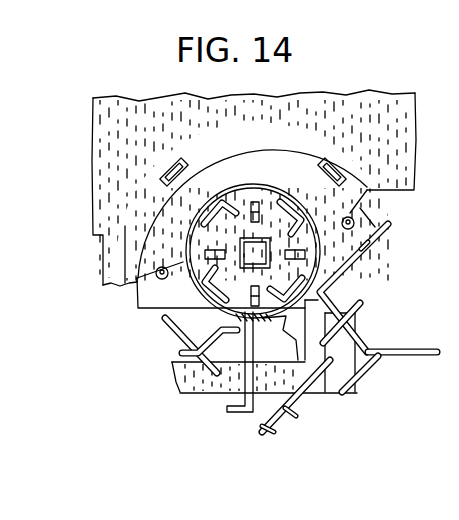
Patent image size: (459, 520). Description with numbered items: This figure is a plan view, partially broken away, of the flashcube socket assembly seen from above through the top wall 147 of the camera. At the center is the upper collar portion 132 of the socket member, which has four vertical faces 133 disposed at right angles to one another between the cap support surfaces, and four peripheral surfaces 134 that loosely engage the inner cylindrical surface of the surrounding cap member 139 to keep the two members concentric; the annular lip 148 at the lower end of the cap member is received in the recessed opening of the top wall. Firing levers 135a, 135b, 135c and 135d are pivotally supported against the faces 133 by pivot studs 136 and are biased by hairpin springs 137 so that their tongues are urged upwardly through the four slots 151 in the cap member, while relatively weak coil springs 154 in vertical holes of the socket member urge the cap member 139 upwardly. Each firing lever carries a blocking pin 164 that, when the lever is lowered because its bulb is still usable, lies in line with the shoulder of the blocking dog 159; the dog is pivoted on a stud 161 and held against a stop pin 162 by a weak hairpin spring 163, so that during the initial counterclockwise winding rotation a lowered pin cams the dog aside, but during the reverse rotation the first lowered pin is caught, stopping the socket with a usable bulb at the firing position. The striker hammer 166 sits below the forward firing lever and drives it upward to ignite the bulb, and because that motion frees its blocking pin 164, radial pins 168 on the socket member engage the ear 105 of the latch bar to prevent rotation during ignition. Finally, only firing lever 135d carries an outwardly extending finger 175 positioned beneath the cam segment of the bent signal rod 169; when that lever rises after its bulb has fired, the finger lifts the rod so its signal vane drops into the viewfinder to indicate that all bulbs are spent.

The top wall 147 is at (103, 150).
The annular lip 148 is at (103, 247).
The cap member 139 is at (140, 208).
The upper collar portion 132 is at (318, 220).
The slots 151 is at (182, 168).
The firing lever 135b is at (168, 166).
The firing lever 135a is at (342, 160).
The coil springs 154 is at (162, 265).
The peripheral surfaces 134 is at (138, 295).
The vertical faces 133 is at (227, 316).
The firing lever 135d is at (320, 297).
The hairpin springs 137 is at (343, 287).
The pivot studs 136 is at (363, 260).
The finger 175 is at (372, 348).
The bent signal rod 169 is at (437, 345).
The blocking pin 164 is at (163, 353).
The striker hammer 166 is at (345, 392).
The radial pins 168 is at (252, 343).
The firing lever 135c is at (207, 373).
The ear 105 is at (247, 383).
The stud 161 is at (292, 415).
The stop pin 162 is at (268, 430).
The hairpin spring 163 is at (293, 420).
The blocking dog 159 is at (262, 420).